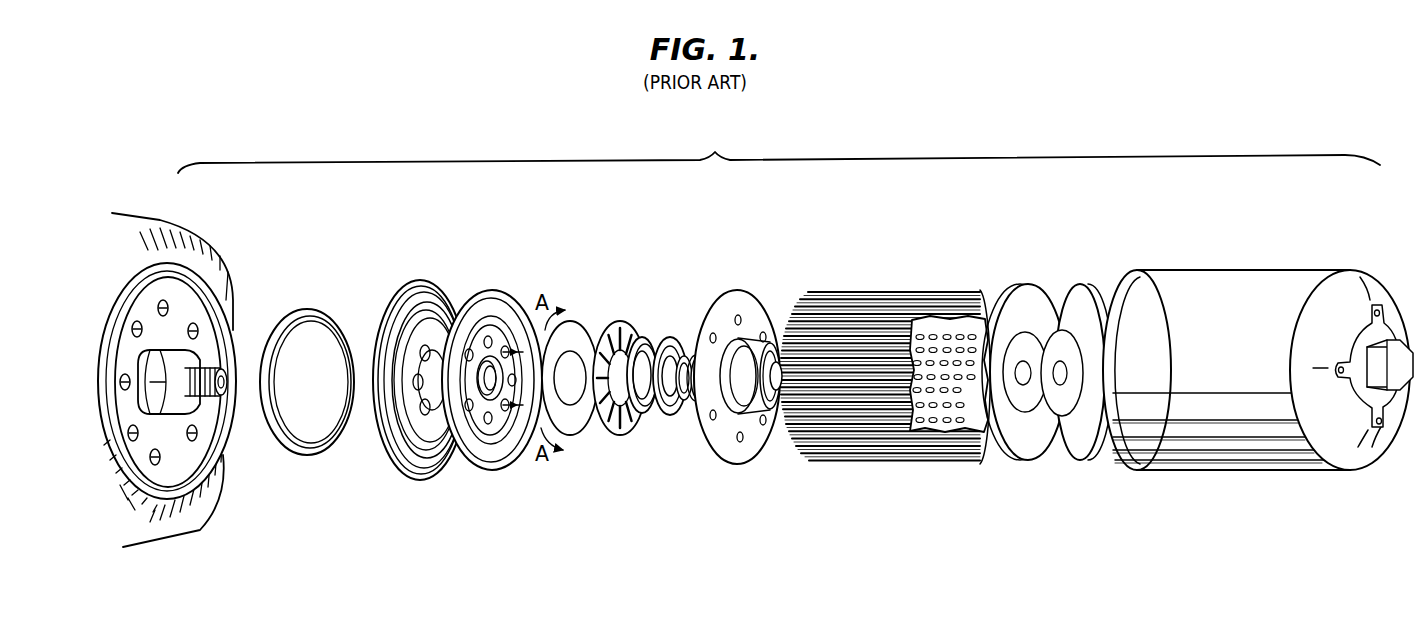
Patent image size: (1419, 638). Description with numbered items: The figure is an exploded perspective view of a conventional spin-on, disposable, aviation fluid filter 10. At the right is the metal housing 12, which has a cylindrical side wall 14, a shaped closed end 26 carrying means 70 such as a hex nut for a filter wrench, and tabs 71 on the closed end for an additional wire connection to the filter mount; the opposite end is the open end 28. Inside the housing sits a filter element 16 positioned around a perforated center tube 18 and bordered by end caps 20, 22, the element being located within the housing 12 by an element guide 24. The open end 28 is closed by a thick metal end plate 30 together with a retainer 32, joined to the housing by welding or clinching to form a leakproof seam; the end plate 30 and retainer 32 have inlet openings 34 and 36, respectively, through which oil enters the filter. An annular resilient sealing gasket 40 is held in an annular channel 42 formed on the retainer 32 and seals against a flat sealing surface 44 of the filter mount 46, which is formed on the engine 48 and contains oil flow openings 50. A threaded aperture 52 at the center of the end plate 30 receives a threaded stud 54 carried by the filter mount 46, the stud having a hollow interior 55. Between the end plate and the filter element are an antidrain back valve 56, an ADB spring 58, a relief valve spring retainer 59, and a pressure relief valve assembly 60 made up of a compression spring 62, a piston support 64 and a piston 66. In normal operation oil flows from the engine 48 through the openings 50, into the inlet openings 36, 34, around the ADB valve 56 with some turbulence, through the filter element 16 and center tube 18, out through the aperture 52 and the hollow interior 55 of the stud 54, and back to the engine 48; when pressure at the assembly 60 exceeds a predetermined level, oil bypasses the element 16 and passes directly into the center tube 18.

The fluid filter 10 is at (702, 141).
The metal housing 12 is at (1240, 470).
The cylindrical side wall 14 is at (1226, 372).
The filter element 16 is at (902, 287).
The perforated center tube 18 is at (952, 424).
The end cap 20 is at (732, 465).
The end cap 22 is at (1023, 462).
The element guide 24 is at (1095, 288).
The closed end 26 is at (1347, 283).
The open end 28 is at (1133, 273).
The end plate 30 is at (520, 300).
The retainer 32 is at (450, 288).
The inlet openings 34 is at (489, 336).
The inlet openings 36 is at (424, 410).
The sealing gasket 40 is at (297, 455).
The annular channel 42 is at (440, 455).
The flat sealing surface 44 is at (125, 407).
The filter mount 46 is at (193, 247).
The engine 48 is at (212, 262).
The oil flow openings 50 is at (158, 462).
The threaded aperture 52 is at (501, 410).
The threaded stud 54 is at (169, 370).
The hollow interior 55 is at (225, 382).
The antidrain back valve 56 is at (573, 436).
The ADB spring 58 is at (615, 436).
The relief valve spring retainer 59 is at (653, 333).
The pressure relief valve assembly 60 is at (632, 452).
The compression spring 62 is at (701, 412).
The piston support 64 is at (678, 412).
The piston 66 is at (680, 333).
The hex nut means 70 is at (1347, 435).
The tabs 71 is at (1358, 366).